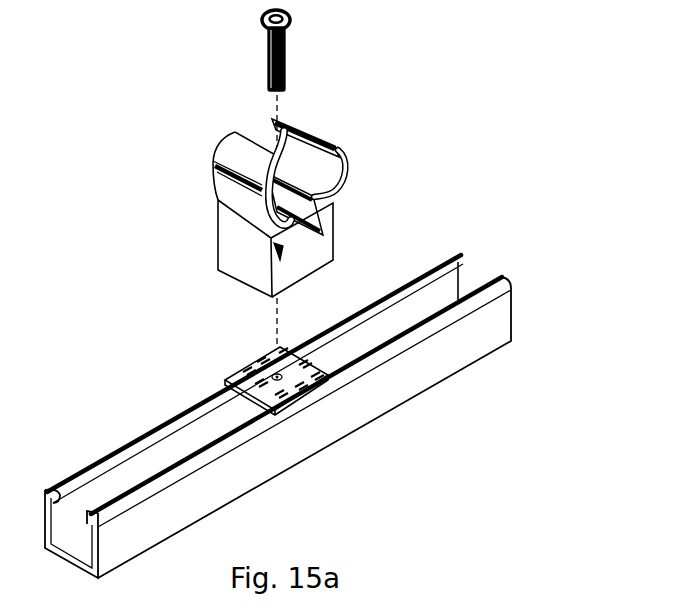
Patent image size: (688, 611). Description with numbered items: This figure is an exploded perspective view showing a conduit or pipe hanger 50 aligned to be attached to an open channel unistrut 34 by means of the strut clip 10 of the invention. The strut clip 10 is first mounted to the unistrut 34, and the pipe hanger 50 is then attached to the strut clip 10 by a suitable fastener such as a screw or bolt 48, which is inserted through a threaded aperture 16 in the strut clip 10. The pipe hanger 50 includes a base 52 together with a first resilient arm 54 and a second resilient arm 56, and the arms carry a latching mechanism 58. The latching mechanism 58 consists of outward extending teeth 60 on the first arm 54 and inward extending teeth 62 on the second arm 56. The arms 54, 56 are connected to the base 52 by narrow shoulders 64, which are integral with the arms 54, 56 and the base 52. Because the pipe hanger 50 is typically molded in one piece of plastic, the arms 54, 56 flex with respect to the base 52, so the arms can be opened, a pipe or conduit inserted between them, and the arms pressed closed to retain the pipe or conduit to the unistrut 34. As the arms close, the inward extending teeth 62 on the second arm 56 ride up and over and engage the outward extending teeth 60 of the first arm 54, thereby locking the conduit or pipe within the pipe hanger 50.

The strut clip 10 is at (292, 400).
The threaded aperture 16 is at (240, 366).
The unistrut 34 is at (512, 318).
The screw or bolt 48 is at (285, 63).
The pipe hanger 50 is at (180, 268).
The base 52 is at (320, 267).
The first resilient arm 54 is at (347, 153).
The second resilient arm 56 is at (250, 178).
The latching mechanism 58 is at (250, 118).
The outward extending teeth 60 is at (318, 126).
The inward extending teeth 62 is at (290, 168).
The narrow shoulders 64 is at (225, 228).